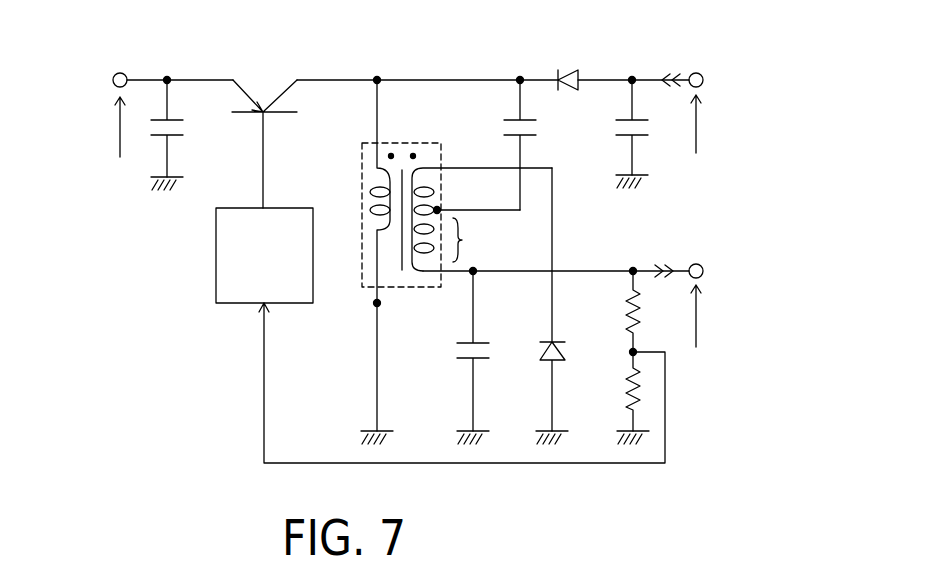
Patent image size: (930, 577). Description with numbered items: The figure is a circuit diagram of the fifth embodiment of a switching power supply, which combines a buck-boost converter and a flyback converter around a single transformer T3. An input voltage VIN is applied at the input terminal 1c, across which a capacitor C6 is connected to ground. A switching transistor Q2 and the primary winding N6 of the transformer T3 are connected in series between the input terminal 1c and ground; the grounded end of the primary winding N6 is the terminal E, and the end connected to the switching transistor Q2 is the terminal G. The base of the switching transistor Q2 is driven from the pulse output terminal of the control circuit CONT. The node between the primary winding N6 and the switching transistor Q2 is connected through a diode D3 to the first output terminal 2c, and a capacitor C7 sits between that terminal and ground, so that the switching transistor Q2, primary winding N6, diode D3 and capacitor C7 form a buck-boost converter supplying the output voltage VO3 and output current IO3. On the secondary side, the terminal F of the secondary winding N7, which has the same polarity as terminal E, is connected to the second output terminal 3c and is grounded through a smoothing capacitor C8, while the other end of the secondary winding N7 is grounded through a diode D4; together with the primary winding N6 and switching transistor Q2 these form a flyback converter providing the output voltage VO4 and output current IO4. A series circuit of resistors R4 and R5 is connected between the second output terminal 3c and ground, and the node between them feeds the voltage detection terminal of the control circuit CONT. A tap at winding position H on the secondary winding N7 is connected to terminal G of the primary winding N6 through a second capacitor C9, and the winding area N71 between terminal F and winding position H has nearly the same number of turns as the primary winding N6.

The input terminal 1c is at (113, 75).
The first output terminal 2c is at (703, 75).
The second output terminal 3c is at (703, 266).
The switching transistor Q2 is at (264, 124).
The capacitor C6 is at (184, 135).
The capacitor C7 is at (611, 134).
The smoothing capacitor C8 is at (457, 357).
The second capacitor C9 is at (540, 145).
The diode D3 is at (569, 56).
The diode D4 is at (537, 306).
The resistor R4 is at (612, 311).
The resistor R5 is at (617, 398).
The transformer T3 is at (360, 148).
The primary winding N6 is at (362, 191).
The secondary winding N7 is at (482, 199).
The winding area N71 is at (486, 240).
The control circuit CONT is at (220, 300).
The terminal E is at (366, 316).
The terminal F is at (465, 290).
The terminal G is at (389, 70).
The winding position H is at (449, 207).
The input voltage VIN is at (99, 137).
The output voltage VO3 is at (719, 136).
The output voltage VO4 is at (719, 329).
The output current IO3 is at (662, 58).
The output current IO4 is at (659, 249).